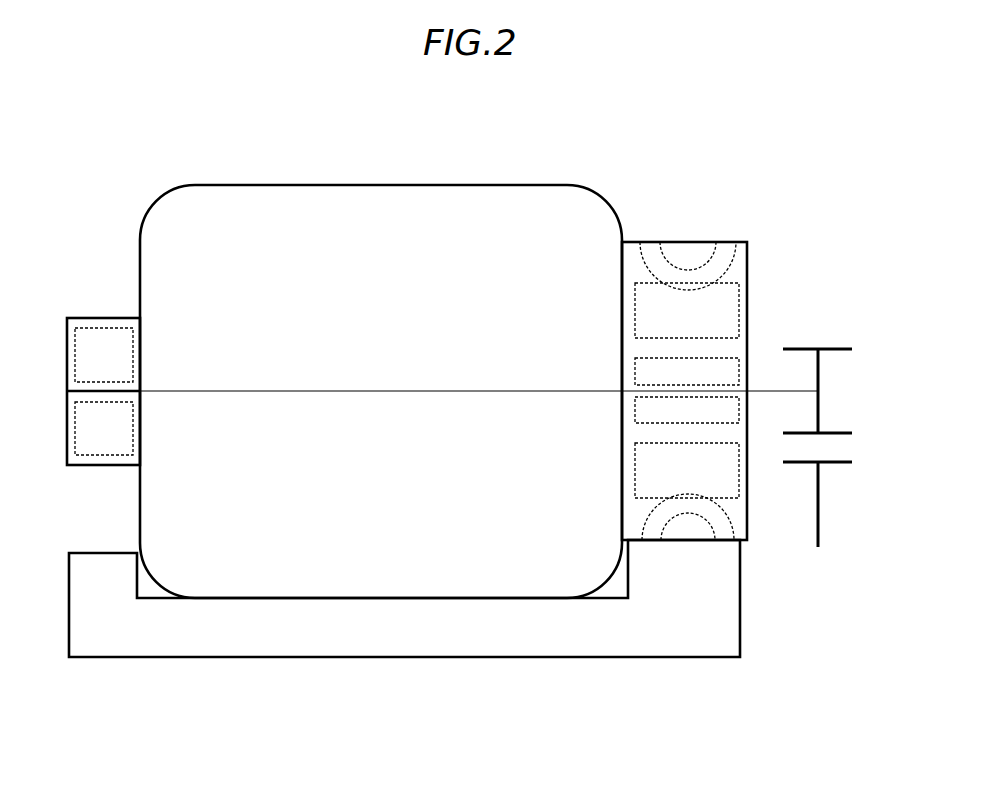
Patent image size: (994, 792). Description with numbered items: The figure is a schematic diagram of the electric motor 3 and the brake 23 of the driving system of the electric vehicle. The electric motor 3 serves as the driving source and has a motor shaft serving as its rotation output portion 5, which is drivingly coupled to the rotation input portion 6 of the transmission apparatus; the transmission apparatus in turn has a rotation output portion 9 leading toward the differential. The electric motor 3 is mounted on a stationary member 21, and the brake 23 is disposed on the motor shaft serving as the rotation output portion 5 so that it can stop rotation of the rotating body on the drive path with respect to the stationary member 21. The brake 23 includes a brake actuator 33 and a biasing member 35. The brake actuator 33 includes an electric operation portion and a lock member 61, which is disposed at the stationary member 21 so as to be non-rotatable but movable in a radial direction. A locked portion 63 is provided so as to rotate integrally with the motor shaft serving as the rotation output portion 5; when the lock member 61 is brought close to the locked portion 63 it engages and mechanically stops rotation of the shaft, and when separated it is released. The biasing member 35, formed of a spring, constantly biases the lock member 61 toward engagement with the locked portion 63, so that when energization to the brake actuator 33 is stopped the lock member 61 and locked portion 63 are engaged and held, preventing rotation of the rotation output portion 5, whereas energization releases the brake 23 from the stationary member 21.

The electric motor 3 is at (355, 158).
The brake 23 is at (757, 234).
The lock member 61 is at (712, 292).
The locked portion 63 is at (643, 410).
The biasing member 35 is at (648, 515).
The brake actuator 33 is at (624, 313).
The stationary member 21 is at (400, 642).
The rotation output portion 5 is at (772, 391).
The rotation input portion 6 is at (820, 368).
The rotation output portion 9 is at (822, 505).